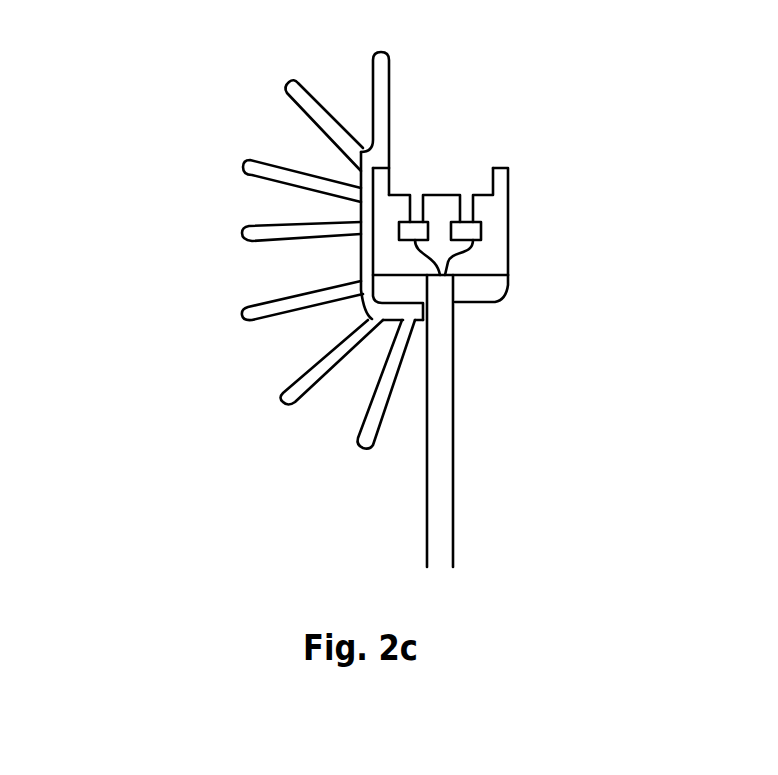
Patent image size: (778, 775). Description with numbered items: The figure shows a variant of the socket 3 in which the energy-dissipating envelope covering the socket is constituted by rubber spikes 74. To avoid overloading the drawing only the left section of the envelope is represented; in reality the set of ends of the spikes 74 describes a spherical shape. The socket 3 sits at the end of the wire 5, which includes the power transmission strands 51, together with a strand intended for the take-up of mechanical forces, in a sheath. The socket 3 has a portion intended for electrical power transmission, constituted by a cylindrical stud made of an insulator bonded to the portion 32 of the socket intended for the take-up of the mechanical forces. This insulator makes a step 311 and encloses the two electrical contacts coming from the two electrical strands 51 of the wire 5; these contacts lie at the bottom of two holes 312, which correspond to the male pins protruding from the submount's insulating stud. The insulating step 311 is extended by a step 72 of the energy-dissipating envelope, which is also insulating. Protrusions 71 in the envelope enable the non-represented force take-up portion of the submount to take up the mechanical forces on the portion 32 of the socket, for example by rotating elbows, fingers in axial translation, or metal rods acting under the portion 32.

The socket 3 is at (97, 13).
The wire 5 is at (443, 408).
The portion of the socket intended for the take-up of the mechanical forces 32 is at (475, 293).
The electrical strands 51 is at (447, 262).
The protrusions 71 is at (379, 311).
The step of the energy-dissipating envelope 72 is at (380, 65).
The rubber spikes 74 is at (262, 173).
The step 311 is at (503, 182).
The holes 312 is at (468, 213).